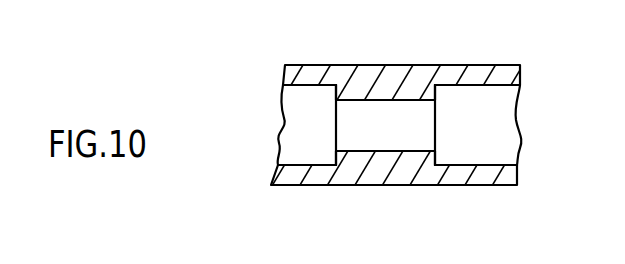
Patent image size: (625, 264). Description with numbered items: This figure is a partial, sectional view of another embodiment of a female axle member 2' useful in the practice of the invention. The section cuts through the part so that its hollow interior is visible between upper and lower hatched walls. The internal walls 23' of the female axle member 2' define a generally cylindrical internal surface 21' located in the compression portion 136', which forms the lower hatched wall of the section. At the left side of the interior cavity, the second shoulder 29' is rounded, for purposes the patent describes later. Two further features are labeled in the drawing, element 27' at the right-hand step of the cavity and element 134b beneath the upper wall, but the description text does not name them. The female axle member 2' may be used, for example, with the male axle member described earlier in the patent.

The female axle member 2' is at (361, 137).
The generally cylindrical internal surface 21' is at (385, 125).
The internal walls 23' is at (403, 82).
The right recess 27' is at (476, 149).
The second shoulder 29' is at (307, 125).
The shoulder 134b is at (452, 85).
The compression portion 136' is at (407, 179).